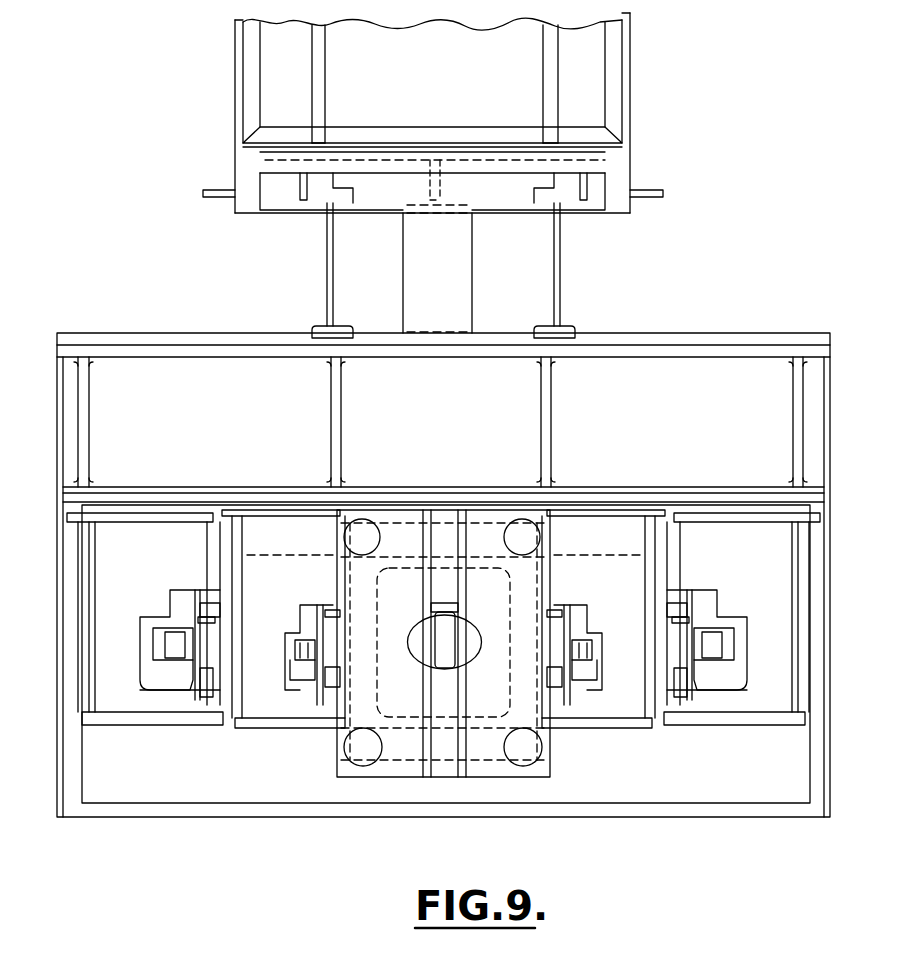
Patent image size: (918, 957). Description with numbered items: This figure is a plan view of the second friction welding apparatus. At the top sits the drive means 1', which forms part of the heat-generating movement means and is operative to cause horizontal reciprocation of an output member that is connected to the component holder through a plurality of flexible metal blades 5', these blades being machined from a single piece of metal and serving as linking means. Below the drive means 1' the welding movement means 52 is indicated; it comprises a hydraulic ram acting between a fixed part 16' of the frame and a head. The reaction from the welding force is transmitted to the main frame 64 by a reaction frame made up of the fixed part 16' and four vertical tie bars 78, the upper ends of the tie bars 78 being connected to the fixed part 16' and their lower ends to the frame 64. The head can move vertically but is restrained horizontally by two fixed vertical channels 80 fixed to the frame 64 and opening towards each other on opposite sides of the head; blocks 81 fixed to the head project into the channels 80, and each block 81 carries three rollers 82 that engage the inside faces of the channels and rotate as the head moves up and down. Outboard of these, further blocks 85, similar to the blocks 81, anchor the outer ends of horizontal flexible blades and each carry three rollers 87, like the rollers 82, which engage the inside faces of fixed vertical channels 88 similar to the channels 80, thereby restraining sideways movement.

The drive means 1' is at (460, 113).
The flexible metal blades 5' is at (466, 273).
The welding movement means 52 is at (582, 224).
The frame 64 is at (718, 333).
The fixed part of the frame 16' is at (443, 604).
The vertical tie bars 78 is at (538, 527).
The fixed vertical channels 80 is at (287, 632).
The blocks 81 is at (305, 680).
The rollers 82 is at (558, 610).
The blocks 85 is at (212, 640).
The rollers 87 is at (167, 650).
The fixed vertical channels 88 is at (153, 683).